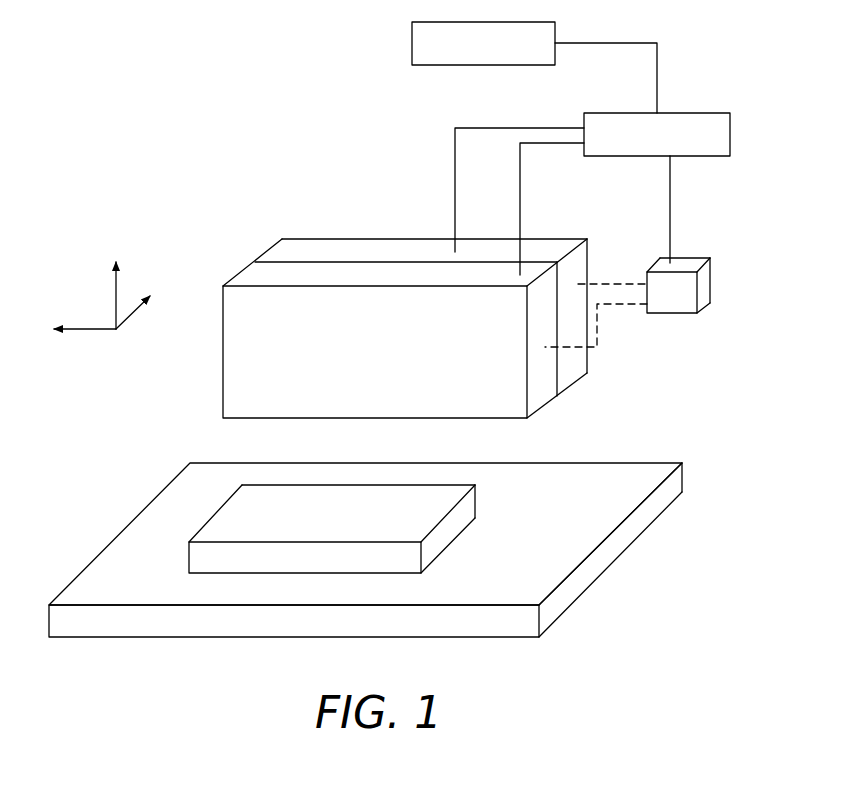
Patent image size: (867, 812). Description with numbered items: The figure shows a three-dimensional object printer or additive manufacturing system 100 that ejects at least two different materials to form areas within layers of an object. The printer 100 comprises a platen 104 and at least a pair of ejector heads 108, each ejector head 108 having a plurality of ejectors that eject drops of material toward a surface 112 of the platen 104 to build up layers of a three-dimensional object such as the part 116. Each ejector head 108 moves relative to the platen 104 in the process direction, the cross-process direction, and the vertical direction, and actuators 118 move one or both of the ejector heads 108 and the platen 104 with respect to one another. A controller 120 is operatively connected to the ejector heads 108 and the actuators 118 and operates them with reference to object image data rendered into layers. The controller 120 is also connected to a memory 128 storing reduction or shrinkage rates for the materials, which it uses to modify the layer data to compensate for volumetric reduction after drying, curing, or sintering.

The additive manufacturing system 100 is at (236, 173).
The platen 104 is at (670, 487).
The ejector head 108 is at (293, 272).
The surface of the platen 112 is at (140, 535).
The part 116 is at (272, 498).
The actuators 118 is at (670, 313).
The controller 120 is at (695, 113).
The memory 128 is at (412, 43).